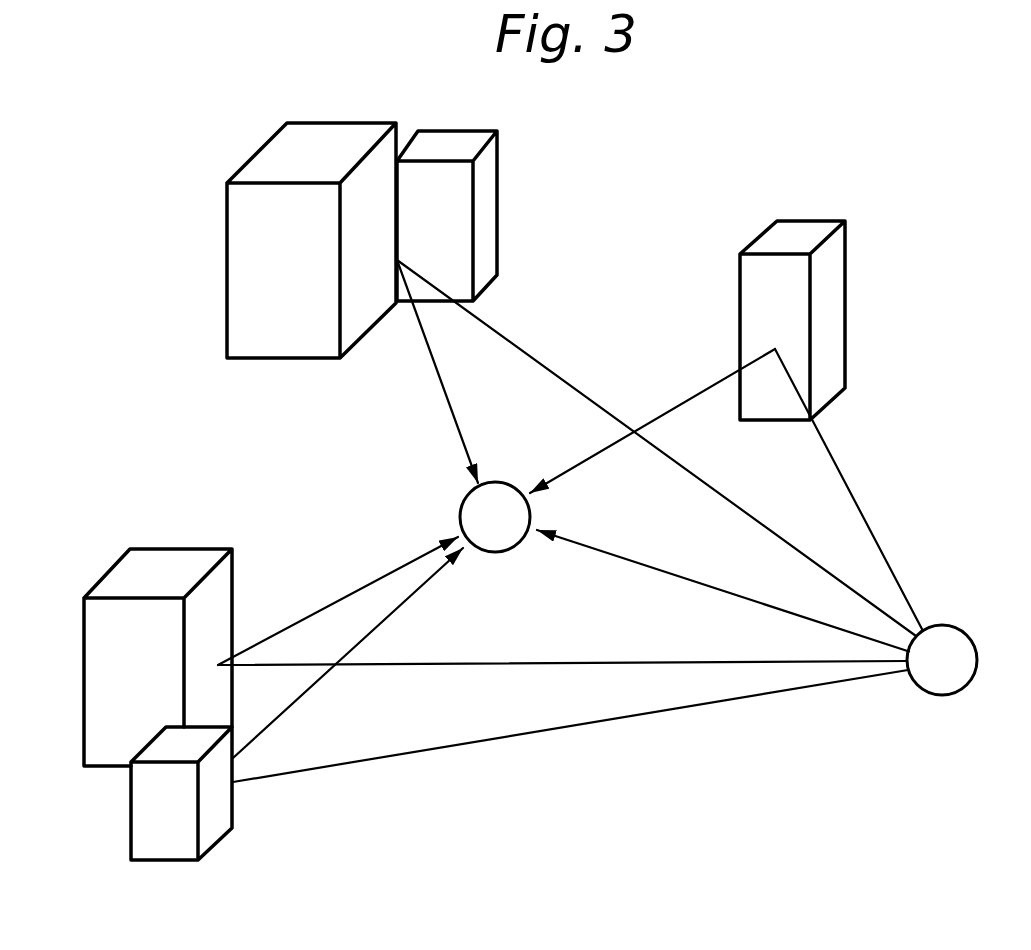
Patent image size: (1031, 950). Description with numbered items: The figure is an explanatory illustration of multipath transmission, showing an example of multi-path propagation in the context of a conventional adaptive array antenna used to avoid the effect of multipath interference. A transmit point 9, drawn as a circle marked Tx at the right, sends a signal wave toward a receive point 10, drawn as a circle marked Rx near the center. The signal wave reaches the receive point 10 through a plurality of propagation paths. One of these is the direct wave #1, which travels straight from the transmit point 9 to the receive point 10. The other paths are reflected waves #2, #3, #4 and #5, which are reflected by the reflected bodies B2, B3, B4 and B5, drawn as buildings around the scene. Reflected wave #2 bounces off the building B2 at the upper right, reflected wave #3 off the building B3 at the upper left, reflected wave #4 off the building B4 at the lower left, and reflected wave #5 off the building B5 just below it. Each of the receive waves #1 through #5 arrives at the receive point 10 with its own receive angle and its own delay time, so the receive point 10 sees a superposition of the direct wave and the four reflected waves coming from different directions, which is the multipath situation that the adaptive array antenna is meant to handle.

The reflected body B2 is at (792, 304).
The reflected body B3 is at (362, 220).
The reflected body B4 is at (158, 642).
The reflected body B5 is at (204, 793).
The transmit point 9 is at (967, 633).
The receive point 10 is at (508, 551).
The direct wave 1 is at (723, 588).
The reflected wave 2 is at (652, 421).
The reflected wave 3 is at (437, 371).
The reflected wave 4 is at (338, 601).
The reflected wave 5 is at (348, 653).